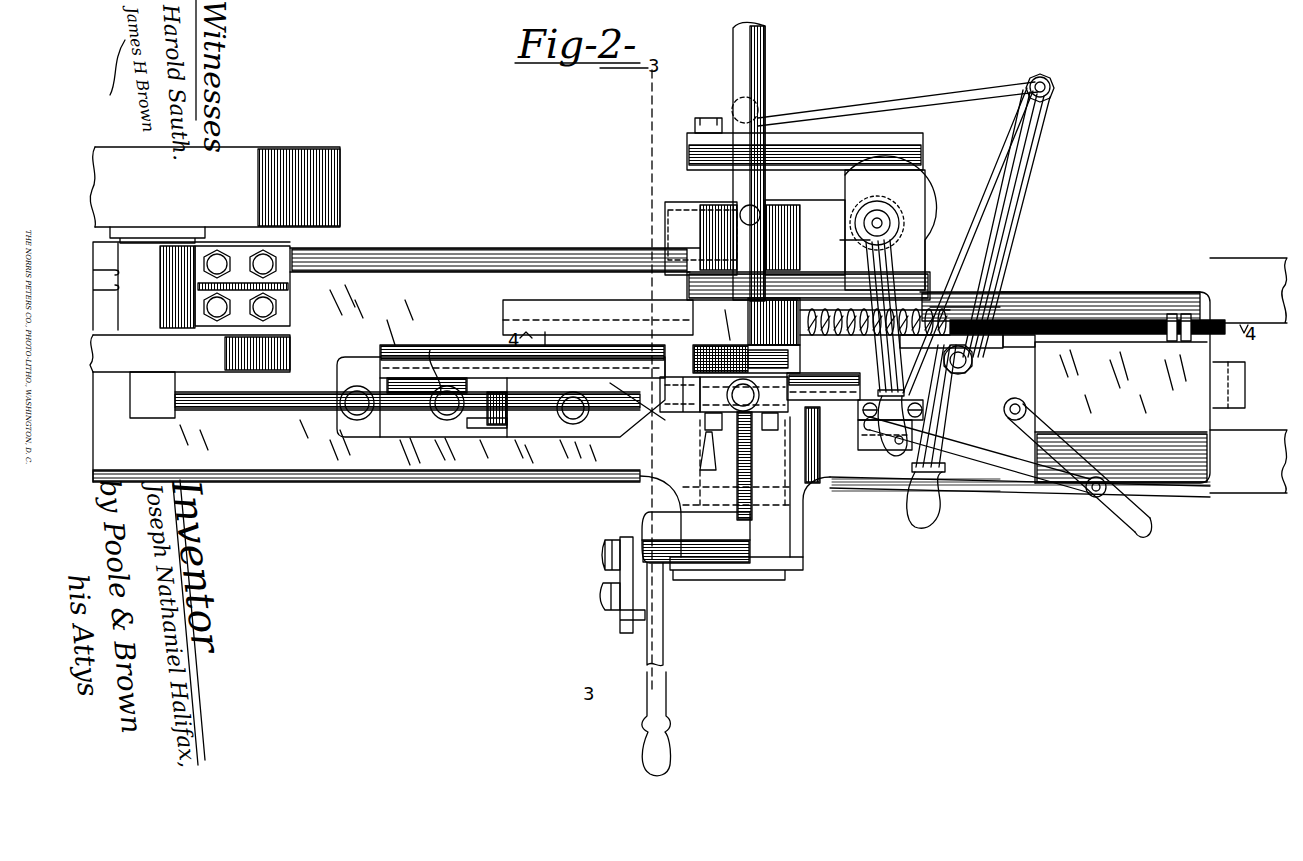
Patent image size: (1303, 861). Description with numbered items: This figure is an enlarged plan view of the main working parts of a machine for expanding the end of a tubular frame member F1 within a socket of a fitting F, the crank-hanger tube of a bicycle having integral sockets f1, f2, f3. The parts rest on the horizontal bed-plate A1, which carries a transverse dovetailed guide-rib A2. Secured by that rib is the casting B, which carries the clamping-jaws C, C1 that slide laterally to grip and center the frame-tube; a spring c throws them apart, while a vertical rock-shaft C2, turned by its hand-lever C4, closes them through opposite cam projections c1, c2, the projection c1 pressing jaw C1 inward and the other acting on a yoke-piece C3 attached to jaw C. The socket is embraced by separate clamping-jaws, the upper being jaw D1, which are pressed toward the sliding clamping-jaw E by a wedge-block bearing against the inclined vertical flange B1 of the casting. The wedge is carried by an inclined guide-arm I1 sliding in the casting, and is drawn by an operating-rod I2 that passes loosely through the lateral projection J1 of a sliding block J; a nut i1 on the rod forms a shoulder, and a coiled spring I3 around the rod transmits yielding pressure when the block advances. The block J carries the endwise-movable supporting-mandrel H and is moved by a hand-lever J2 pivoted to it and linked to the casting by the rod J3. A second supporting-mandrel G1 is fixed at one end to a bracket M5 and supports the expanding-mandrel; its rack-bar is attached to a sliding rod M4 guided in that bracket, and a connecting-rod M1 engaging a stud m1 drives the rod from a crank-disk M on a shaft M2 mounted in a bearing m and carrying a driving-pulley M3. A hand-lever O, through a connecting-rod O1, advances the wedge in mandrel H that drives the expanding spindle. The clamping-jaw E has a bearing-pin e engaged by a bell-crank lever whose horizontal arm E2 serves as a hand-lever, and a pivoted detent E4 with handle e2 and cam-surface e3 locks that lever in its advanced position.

The driving-pulley M3 is at (215, 187).
The bearing m is at (191, 286).
The shaft M2 is at (159, 287).
The crank-disk M is at (190, 353).
The connecting-rod M1 is at (290, 420).
The bed-plate A1 is at (712, 384).
The vertical flange B1 is at (687, 285).
The guide-arm I1 is at (598, 313).
The sliding rod M4 is at (501, 380).
The bracket M5 is at (488, 385).
The stud m1 is at (490, 432).
The clamping-jaw D1 is at (728, 367).
The frame member F1 is at (766, 60).
The casting B is at (905, 165).
The clamping-jaw C is at (680, 200).
The spring c is at (755, 205).
The clamping-jaw C1 is at (815, 185).
The rock-shaft C2 is at (890, 218).
The yoke-piece C3 is at (898, 195).
The cam projection c2 is at (885, 226).
The cam projection c1 is at (860, 235).
The connecting rod or link J3 is at (895, 115).
The hand-lever J2 is at (1000, 190).
The lateral projection J1 is at (997, 312).
The sliding block J is at (940, 420).
The coiled spring I3 is at (925, 305).
The nut i1 is at (1172, 315).
The operating-rod I2 is at (1040, 310).
The hand-lever O is at (1070, 470).
The connecting-rod O1 is at (1013, 465).
The supporting-mandrel G1 is at (818, 395).
The hand-lever C4 is at (939, 349).
The supporting-mandrel H is at (830, 412).
The fitting F is at (720, 403).
The socket f1 is at (713, 430).
The socket f2 is at (722, 460).
The rack f3 is at (760, 466).
The clamping-jaw E is at (735, 487).
The guide-rib A2 is at (770, 580).
The pivoted detent E4 is at (640, 573).
The bearing-pin e is at (615, 555).
The cam-surface e3 is at (610, 602).
The actuating-handle e2 is at (632, 616).
The horizontal arm E2 is at (665, 615).